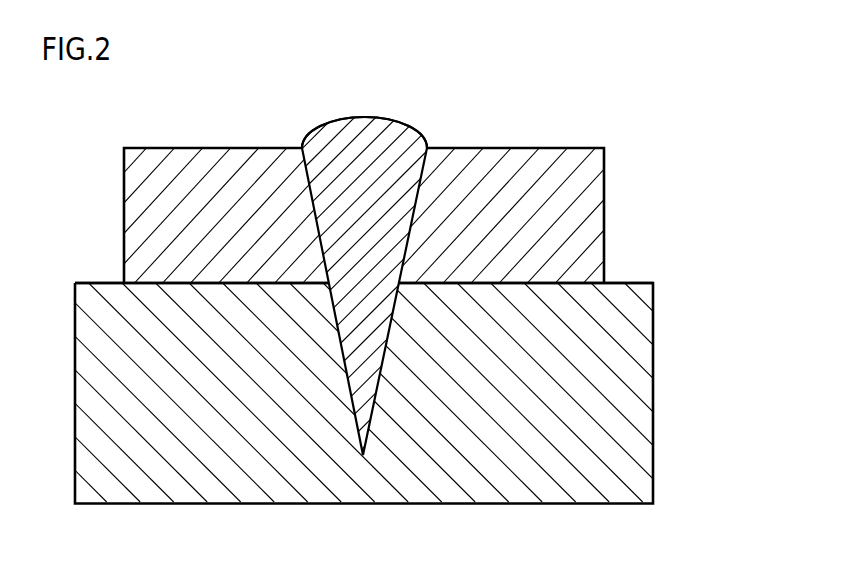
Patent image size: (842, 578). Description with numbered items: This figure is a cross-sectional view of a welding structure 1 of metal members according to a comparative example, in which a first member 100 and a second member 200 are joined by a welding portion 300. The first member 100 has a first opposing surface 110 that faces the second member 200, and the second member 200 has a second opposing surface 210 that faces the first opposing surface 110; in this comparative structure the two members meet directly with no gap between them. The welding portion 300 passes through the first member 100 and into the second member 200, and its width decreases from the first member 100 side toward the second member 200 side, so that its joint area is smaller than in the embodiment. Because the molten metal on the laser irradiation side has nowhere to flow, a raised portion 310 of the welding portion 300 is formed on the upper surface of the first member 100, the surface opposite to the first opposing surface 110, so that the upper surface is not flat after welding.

The welding structure 1 is at (642, 147).
The first member 100 is at (592, 218).
The first opposing surface 110 is at (252, 288).
The second member 200 is at (643, 389).
The second opposing surface 210 is at (519, 280).
The welding portion 300 is at (391, 182).
The raised portion 310 is at (362, 128).